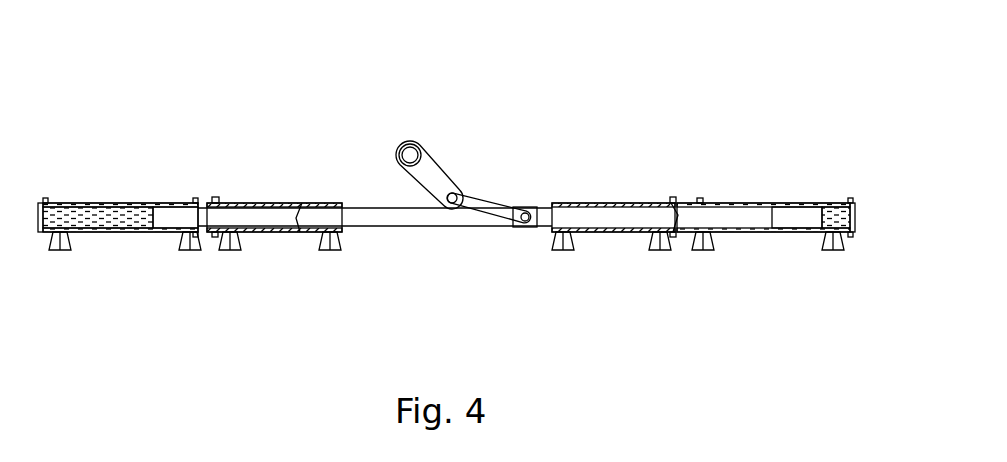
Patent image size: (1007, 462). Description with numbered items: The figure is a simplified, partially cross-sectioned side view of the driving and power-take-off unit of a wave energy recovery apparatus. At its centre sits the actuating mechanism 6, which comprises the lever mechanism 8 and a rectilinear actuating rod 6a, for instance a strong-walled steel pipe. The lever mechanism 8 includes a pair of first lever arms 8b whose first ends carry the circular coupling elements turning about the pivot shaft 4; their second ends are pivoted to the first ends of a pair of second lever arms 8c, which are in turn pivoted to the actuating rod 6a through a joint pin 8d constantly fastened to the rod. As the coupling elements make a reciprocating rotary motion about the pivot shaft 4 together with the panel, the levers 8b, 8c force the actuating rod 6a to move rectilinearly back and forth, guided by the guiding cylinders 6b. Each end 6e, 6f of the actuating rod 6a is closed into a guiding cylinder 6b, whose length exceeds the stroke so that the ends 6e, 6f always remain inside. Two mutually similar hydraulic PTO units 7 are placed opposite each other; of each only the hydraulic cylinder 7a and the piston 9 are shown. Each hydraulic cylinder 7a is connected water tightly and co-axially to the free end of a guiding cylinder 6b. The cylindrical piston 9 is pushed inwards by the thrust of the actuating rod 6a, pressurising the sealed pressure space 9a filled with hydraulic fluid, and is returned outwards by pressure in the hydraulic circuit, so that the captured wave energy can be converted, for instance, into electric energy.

The pivot shaft 4 is at (408, 141).
The actuating mechanism 6 is at (462, 173).
The actuating rod 6a is at (367, 212).
The guiding cylinder 6b is at (272, 207).
The end of the actuating rod 6e is at (300, 220).
The end of the actuating rod 6f is at (677, 220).
The hydraulic PTO unit 7 is at (455, 187).
The hydraulic cylinder 7a is at (72, 203).
The lever mechanism 8 is at (469, 158).
The first lever arm 8b is at (437, 165).
The second lever arm 8c is at (483, 212).
The joint pin 8d is at (528, 224).
The piston 9 is at (205, 213).
The pressure space 9a is at (118, 225).